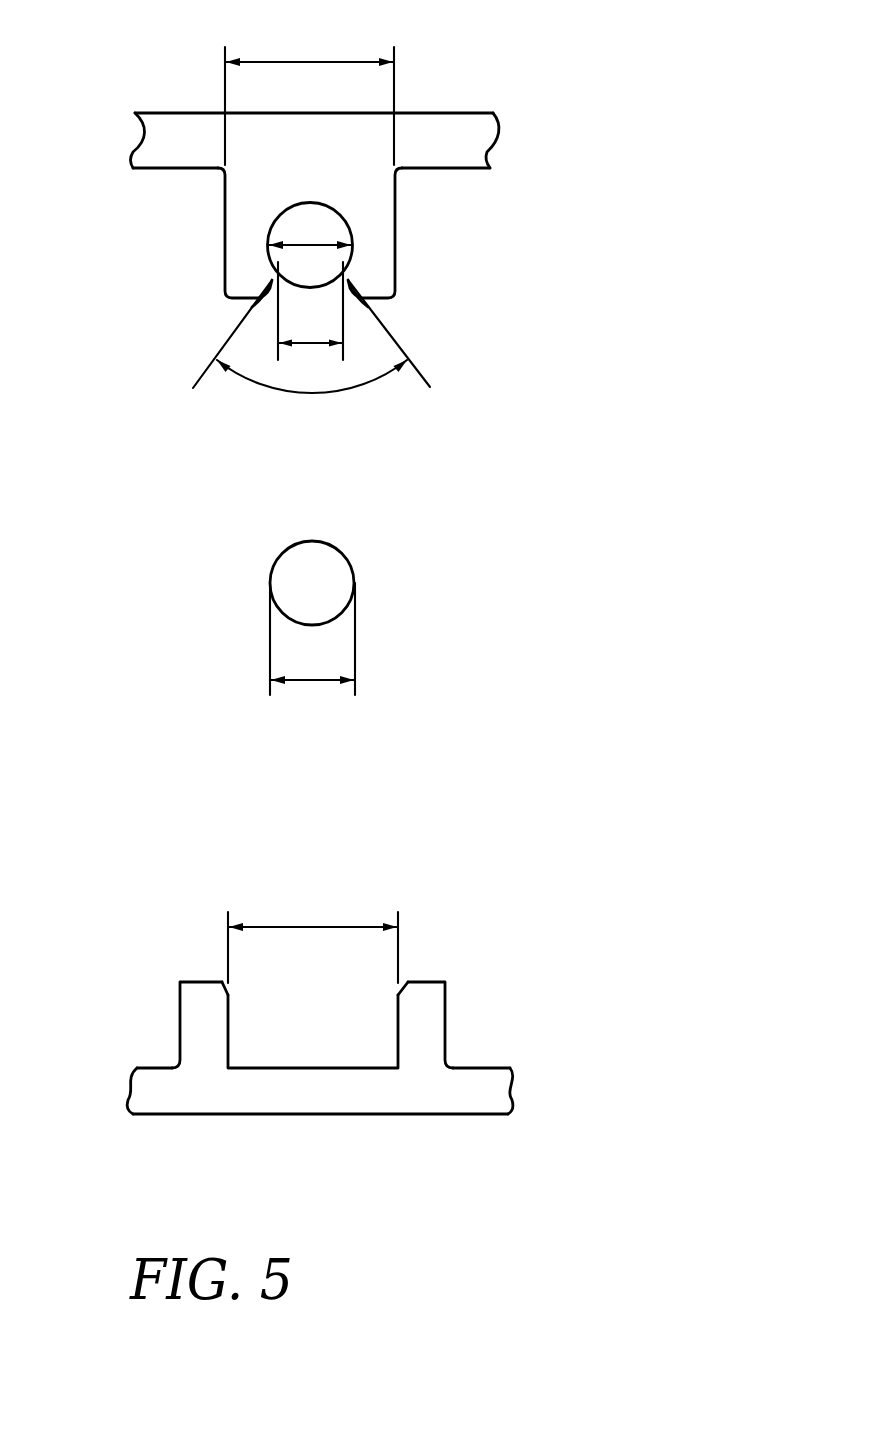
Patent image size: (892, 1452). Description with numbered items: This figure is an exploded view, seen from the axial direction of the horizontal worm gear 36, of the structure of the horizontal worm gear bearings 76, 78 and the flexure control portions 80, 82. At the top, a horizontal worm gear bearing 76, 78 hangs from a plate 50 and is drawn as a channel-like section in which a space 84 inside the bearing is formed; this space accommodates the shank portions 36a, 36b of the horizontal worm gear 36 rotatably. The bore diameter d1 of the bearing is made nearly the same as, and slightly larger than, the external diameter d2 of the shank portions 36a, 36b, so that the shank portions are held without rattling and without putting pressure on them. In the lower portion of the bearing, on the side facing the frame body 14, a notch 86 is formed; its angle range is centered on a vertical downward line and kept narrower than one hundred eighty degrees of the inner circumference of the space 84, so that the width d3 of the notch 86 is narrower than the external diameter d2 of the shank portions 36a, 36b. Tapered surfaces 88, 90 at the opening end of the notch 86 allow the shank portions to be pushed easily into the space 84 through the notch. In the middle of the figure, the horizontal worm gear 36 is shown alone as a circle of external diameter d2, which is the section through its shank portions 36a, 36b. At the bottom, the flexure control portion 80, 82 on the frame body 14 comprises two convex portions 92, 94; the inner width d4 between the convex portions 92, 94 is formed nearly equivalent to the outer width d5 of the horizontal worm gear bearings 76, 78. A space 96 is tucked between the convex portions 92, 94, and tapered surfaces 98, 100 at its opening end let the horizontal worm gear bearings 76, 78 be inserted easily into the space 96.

The frame body 14 is at (483, 1090).
The horizontal worm gear 36 is at (383, 565).
The shank portion 36a is at (383, 565).
The shank portion 36b is at (377, 578).
The plate 50 is at (467, 140).
The horizontal worm gear bearing 76 is at (422, 233).
The horizontal worm gear bearing 78 is at (424, 237).
The flexure control portion 80 is at (398, 1014).
The flexure control portion 82 is at (398, 1014).
The space inside the bearing 84 is at (298, 222).
The notch 86 is at (297, 303).
The tapered surface 88 is at (258, 306).
The tapered surface 90 is at (373, 318).
The convex portion 92 is at (195, 1000).
The convex portion 94 is at (427, 1003).
The space 96 is at (310, 1030).
The tapered surface 98 is at (223, 985).
The tapered surface 100 is at (402, 982).
The bore diameter d1 is at (312, 243).
The external diameter d2 is at (312, 682).
The width of the notch d3 is at (310, 311).
The inner width d4 is at (313, 927).
The outer width d5 is at (309, 96).